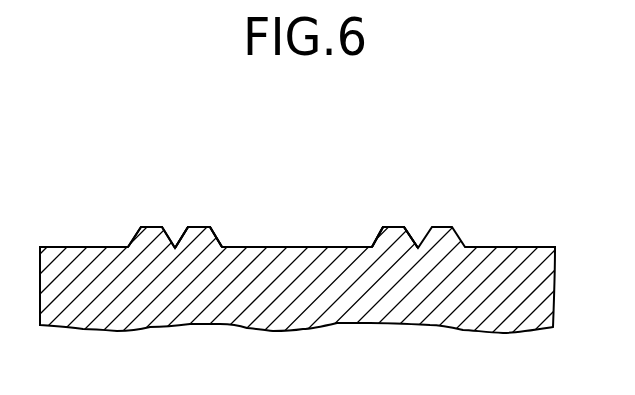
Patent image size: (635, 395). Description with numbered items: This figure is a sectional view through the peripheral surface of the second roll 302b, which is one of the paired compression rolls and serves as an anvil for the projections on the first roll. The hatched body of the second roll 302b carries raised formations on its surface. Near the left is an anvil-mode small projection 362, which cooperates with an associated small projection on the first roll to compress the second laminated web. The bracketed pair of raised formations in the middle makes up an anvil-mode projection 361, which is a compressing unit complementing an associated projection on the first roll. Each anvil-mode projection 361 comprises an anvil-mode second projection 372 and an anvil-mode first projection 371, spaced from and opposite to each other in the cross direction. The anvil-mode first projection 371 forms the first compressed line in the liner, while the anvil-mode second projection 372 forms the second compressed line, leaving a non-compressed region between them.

The second roll 302b is at (543, 148).
The anvil-mode small projection 362 is at (151, 227).
The anvil-mode projection 361 is at (363, 158).
The anvil-mode second projection 372 is at (200, 227).
The anvil-mode first projection 371 is at (393, 227).